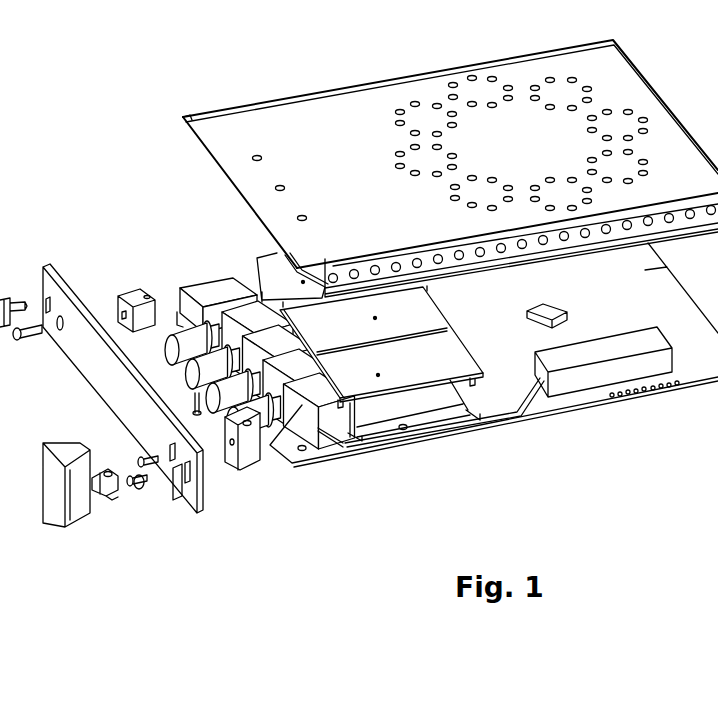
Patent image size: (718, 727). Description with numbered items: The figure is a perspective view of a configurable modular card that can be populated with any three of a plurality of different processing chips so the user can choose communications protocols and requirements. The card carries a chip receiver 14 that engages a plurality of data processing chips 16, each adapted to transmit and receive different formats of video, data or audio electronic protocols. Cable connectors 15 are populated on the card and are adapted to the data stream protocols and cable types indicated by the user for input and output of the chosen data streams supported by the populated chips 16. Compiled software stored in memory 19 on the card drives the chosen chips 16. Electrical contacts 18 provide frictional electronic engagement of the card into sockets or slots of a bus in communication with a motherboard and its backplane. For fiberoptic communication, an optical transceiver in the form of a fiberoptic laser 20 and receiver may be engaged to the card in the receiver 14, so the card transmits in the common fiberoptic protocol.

The chip receiver 14 is at (363, 437).
The cable connectors 15 is at (203, 297).
The data processing chips 16 is at (303, 282).
The electrical contacts 18 is at (645, 395).
The memory 19 is at (557, 305).
The fiberoptic laser 20 is at (647, 343).